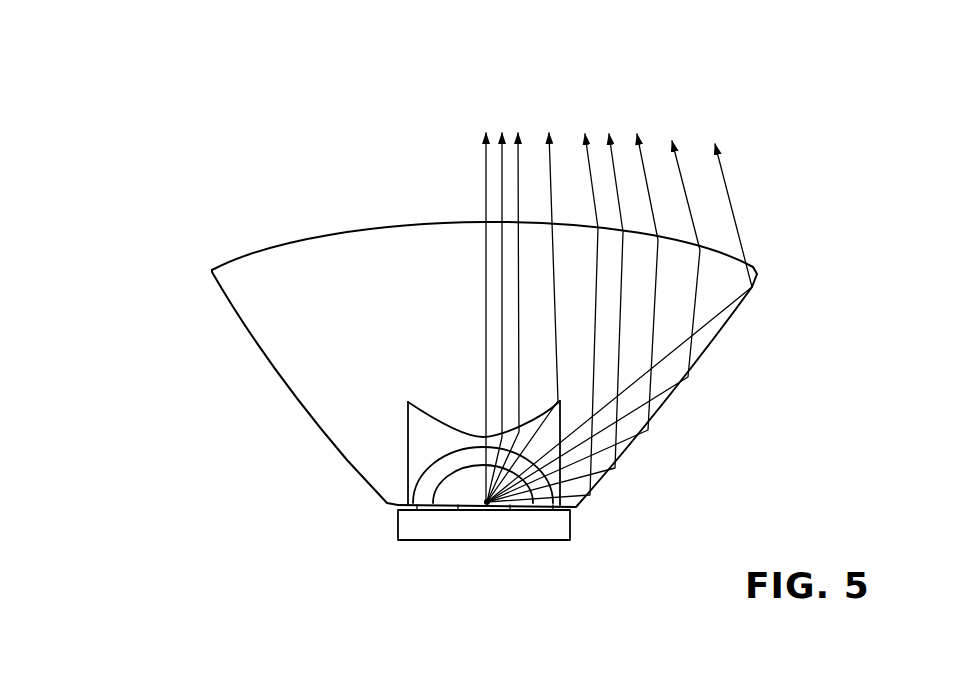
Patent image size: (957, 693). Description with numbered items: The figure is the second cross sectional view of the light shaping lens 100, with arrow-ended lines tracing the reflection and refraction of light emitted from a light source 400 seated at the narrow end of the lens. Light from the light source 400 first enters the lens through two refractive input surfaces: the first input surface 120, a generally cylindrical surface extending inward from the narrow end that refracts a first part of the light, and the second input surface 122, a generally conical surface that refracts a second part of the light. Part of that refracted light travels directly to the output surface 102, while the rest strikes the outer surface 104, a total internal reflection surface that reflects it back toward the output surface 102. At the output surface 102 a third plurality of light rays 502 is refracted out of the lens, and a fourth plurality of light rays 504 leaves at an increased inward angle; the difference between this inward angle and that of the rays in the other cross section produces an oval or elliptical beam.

The light shaping lens 100 is at (156, 304).
The output surface 102 is at (277, 250).
The outer surface 104 is at (300, 405).
The first input surface 120 is at (406, 460).
The second input surface 122 is at (432, 402).
The light source 400 is at (423, 541).
The third plurality of light rays 502 is at (564, 128).
The fourth plurality of light rays 504 is at (578, 128).